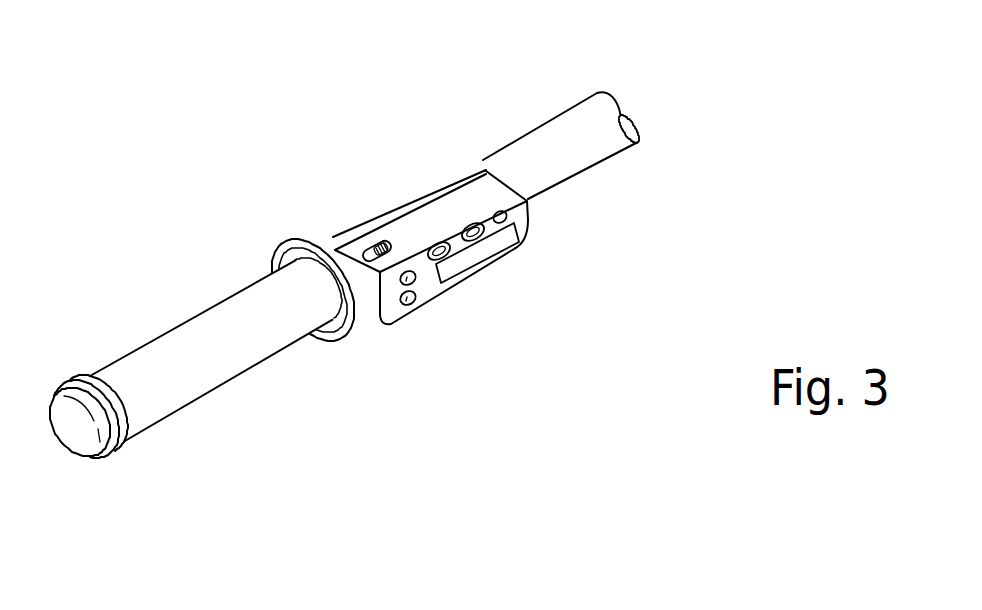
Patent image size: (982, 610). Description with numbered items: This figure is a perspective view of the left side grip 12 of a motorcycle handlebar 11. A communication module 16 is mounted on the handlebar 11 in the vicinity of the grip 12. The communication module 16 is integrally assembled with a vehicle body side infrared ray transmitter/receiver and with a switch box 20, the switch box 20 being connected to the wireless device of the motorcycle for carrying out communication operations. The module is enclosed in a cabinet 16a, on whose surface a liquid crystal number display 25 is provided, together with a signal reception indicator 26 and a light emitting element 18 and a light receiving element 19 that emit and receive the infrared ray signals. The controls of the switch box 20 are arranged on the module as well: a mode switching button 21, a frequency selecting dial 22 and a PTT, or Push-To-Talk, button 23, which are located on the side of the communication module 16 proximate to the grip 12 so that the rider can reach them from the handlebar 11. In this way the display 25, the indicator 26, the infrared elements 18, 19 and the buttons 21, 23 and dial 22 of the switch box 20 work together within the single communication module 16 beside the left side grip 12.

The handlebar 11 is at (543, 123).
The left side grip 12 is at (170, 342).
The communication module 16 is at (462, 238).
The cabinet 16a is at (395, 234).
The light emitting element 18 is at (442, 246).
The light receiving element 19 is at (478, 225).
The switch box 20 is at (289, 603).
The mode switching button 21 is at (418, 285).
The frequency selecting dial 22 is at (369, 239).
The PTT button 23 is at (413, 306).
The liquid crystal number display 25 is at (495, 265).
The signal reception indicator 26 is at (508, 216).